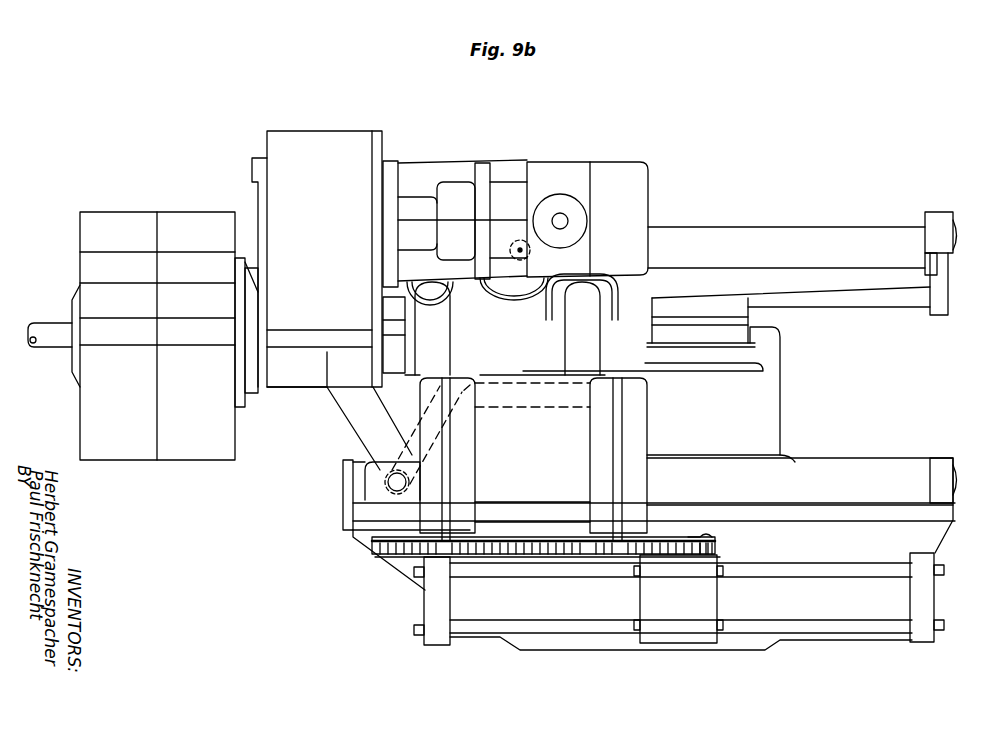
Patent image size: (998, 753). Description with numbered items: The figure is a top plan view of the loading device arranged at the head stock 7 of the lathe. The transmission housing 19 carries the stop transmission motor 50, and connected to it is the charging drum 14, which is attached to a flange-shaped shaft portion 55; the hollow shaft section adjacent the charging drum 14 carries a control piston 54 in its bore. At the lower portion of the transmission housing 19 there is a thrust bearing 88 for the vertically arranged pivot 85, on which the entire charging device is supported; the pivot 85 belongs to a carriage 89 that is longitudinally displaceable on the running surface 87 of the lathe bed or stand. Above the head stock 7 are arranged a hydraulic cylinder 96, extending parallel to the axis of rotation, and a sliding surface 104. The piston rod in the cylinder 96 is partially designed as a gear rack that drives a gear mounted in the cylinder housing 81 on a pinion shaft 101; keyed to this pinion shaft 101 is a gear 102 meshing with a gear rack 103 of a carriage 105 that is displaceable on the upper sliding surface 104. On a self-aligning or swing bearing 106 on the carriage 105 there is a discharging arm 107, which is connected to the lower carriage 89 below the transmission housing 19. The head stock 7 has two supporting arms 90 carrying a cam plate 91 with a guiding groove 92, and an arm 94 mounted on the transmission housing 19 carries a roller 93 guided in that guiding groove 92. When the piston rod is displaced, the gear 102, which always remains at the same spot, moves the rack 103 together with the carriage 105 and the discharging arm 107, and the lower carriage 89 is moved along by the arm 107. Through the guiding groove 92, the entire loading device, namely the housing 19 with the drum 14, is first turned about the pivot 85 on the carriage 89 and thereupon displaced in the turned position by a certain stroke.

The head stock 7 is at (756, 380).
The charging drum 14 is at (118, 224).
The transmission housing 19 is at (318, 162).
The stop transmission motor 50 is at (536, 180).
The control piston 54 is at (47, 330).
The flange-shaped shaft portion 55 is at (249, 290).
The cylinder housing 81 is at (680, 626).
The pivot 85 is at (521, 249).
The longitudinal running surface 87 is at (791, 240).
The thrust bearing 88 is at (467, 287).
The carriage 89 is at (543, 305).
The supporting arms 90 is at (632, 447).
The cam plate 91 is at (566, 452).
The guiding groove 92 is at (490, 398).
The roller 93 is at (386, 482).
The arm 94 is at (356, 402).
The hydraulic cylinder 96 is at (470, 603).
The pinion shaft 101 is at (694, 533).
The gear 102 is at (712, 535).
The gear rack 103 is at (385, 548).
The sliding surface 104 is at (918, 490).
The carriage 105 is at (360, 538).
The self-aligning or swing bearing 106 is at (345, 511).
The discharging arm 107 is at (440, 344).